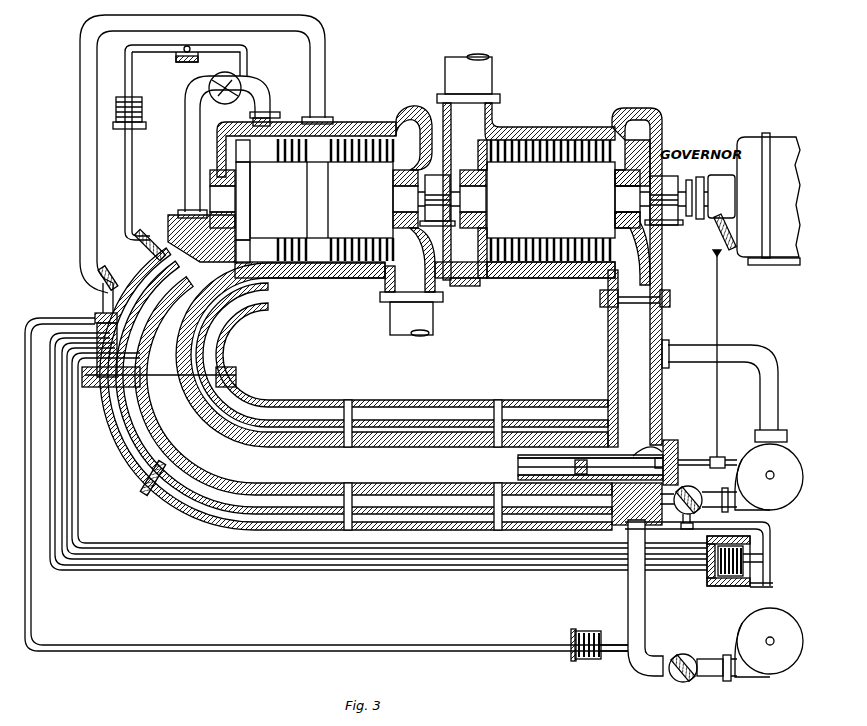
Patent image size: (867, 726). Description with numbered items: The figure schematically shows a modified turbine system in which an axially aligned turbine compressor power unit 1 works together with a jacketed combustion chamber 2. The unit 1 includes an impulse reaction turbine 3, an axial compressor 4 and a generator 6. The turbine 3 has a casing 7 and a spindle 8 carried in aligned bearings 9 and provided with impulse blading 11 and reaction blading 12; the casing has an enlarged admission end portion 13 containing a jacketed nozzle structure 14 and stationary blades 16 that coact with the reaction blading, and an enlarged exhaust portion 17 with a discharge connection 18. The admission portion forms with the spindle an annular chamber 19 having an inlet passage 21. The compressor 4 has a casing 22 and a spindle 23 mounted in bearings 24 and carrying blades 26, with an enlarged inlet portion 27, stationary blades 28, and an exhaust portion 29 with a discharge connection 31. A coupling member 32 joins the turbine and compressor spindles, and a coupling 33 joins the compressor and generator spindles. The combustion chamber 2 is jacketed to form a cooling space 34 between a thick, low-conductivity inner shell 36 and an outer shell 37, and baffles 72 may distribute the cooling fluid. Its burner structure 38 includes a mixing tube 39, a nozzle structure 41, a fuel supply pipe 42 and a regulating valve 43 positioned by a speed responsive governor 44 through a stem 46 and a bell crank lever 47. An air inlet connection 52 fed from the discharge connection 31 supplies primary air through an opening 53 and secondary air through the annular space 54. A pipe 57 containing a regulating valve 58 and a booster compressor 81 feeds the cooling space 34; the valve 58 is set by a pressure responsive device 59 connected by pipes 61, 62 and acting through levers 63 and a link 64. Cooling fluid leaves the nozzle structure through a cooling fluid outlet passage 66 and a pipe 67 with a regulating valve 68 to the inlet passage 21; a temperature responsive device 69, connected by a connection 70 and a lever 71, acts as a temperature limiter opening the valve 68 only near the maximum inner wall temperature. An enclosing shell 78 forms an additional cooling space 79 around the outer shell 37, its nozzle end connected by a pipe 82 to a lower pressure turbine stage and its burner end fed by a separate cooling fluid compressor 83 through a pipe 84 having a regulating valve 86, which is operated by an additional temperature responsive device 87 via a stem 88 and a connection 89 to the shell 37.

The turbine compressor power unit 1 is at (513, 167).
The combustion chamber 2 is at (354, 462).
The turbine 3 is at (321, 200).
The axial compressor 4 is at (551, 200).
The generator 6 is at (768, 199).
The casing 7 is at (330, 277).
The spindle 8 is at (398, 170).
The bearings 9 is at (317, 199).
The impulse blading 11 is at (249, 252).
The reaction blading 12 is at (360, 252).
The admission end portion 13 is at (250, 118).
The jacketed nozzle structure 14 is at (223, 331).
The stationary blades 16 is at (349, 277).
The exhaust portion 17 is at (410, 112).
The discharge connection 18 is at (384, 278).
The annular chamber 19 is at (253, 190).
The inlet passage 21 is at (271, 117).
The casing 22 is at (526, 275).
The spindle 23 is at (620, 170).
The bearings 24 is at (555, 199).
The blades 26 is at (566, 252).
The inlet portion 27 is at (468, 284).
The stationary blades 28 is at (558, 274).
The exhaust portion 29 is at (662, 134).
The discharge connection 31 is at (607, 282).
The coupling member 32 is at (440, 200).
The coupling 33 is at (676, 200).
The cooling space 34 is at (410, 413).
The inner shell 36 is at (268, 447).
The outer shell 37 is at (286, 400).
The burner structure 38 is at (677, 450).
The mixing tube 39 is at (518, 473).
The nozzle structure 41 is at (575, 467).
The fuel supply pipe 42 is at (708, 459).
The regulating valve 43 is at (722, 456).
The speed responsive governor 44 is at (721, 196).
The stem 46 is at (718, 322).
The bell crank lever 47 is at (716, 234).
The air inlet connection 52 is at (606, 351).
The opening 53 is at (644, 445).
The annular space 54 is at (518, 456).
The pipe 57 is at (776, 360).
The regulating valve 58 is at (692, 491).
The pressure responsive device 59 is at (735, 571).
The pipe 61 is at (532, 566).
The pipe 62 is at (483, 556).
The levers 63 is at (771, 541).
The link 64 is at (686, 528).
The cooling fluid outlet passage 66 is at (180, 211).
The pipe 67 is at (186, 150).
The regulating valve 68 is at (220, 104).
The temperature responsive device 69 is at (140, 112).
The connection 70 is at (133, 188).
The lever 71 is at (151, 53).
The baffles 72 is at (352, 412).
The shell 78 is at (466, 403).
The cooling space 79 is at (478, 408).
The booster compressor 81 is at (769, 470).
The pipe 82 is at (326, 50).
The cooling fluid compressor 83 is at (767, 642).
The pipe 84 is at (643, 612).
The regulating valve 86 is at (680, 682).
The temperature responsive device 87 is at (586, 654).
The stem 88 is at (650, 645).
The connection 89 is at (120, 648).